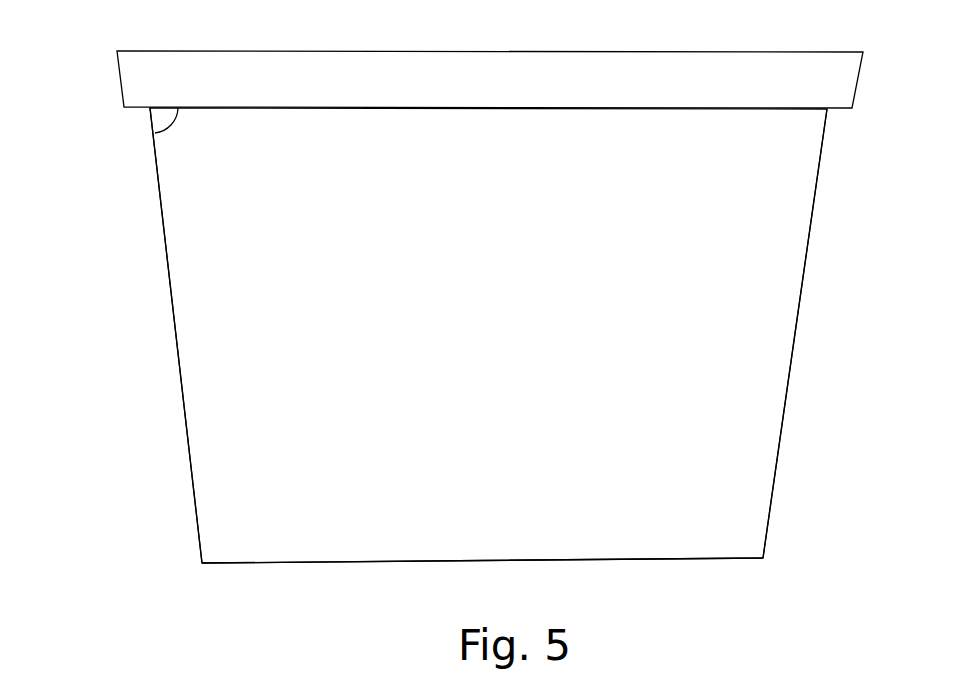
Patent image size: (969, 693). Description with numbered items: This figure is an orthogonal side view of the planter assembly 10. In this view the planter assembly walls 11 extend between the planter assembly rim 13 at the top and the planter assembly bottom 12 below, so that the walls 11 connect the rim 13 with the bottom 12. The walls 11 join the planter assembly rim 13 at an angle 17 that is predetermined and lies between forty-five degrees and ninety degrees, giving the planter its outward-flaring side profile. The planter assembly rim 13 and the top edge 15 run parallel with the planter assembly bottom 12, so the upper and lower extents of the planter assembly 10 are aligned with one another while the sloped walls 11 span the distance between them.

The planter assembly 10 is at (160, 320).
The planter assembly walls 11 is at (207, 410).
The planter assembly bottom 12 is at (264, 563).
The planter assembly rim 13 is at (831, 93).
The top edge 15 is at (462, 52).
The angle 17 is at (175, 118).